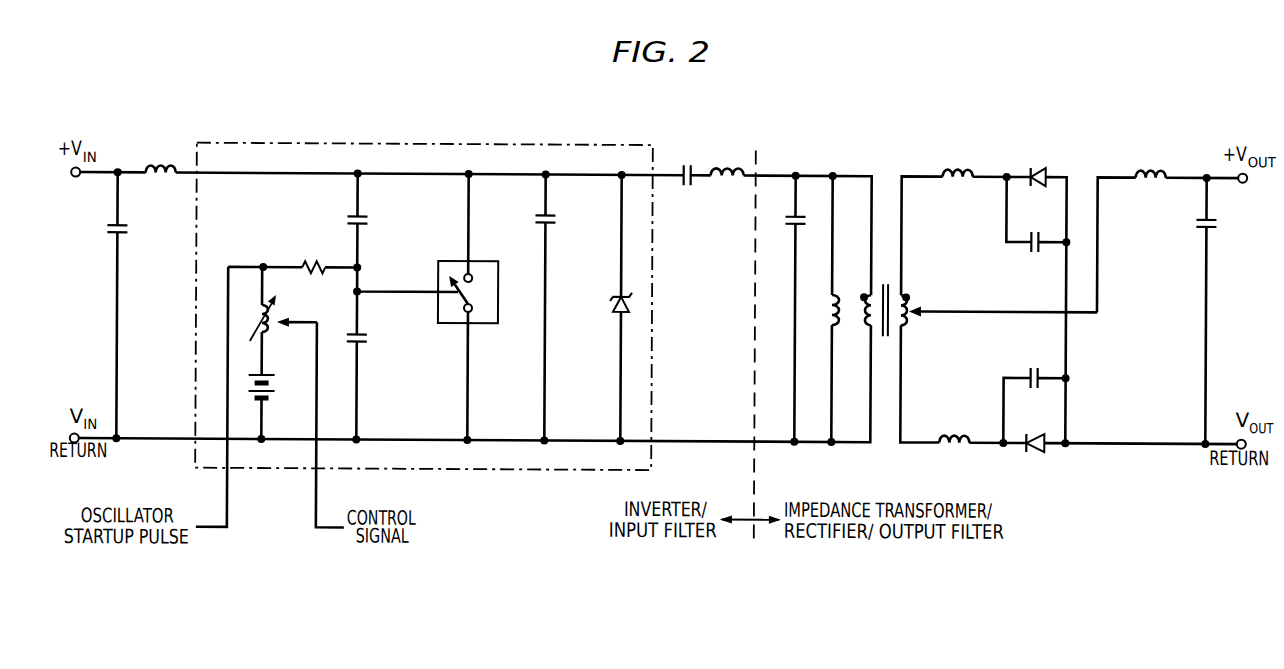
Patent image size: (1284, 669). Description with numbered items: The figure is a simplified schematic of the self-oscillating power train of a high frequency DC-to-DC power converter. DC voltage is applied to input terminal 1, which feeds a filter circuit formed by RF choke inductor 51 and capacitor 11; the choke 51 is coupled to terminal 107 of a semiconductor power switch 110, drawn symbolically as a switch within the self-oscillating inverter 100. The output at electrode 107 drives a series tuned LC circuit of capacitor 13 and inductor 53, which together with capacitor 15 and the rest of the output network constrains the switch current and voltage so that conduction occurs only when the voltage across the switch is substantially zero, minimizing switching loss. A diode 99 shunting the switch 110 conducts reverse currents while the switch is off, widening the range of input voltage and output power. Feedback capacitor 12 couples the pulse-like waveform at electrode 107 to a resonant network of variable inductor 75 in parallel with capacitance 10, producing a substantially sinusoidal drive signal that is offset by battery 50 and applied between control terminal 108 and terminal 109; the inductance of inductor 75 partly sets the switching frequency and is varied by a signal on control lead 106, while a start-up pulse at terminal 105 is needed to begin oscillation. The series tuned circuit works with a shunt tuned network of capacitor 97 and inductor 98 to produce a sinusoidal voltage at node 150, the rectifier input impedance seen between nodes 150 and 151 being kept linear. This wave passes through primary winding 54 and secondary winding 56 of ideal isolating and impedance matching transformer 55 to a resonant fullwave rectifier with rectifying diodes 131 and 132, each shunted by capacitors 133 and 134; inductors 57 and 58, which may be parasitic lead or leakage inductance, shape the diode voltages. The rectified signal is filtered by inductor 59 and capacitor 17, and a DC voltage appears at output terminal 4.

The input terminal 1 is at (101, 179).
The output terminal 4 is at (1240, 180).
The capacitance 10 is at (366, 365).
The capacitor 11 is at (124, 305).
The feedback capacitor 12 is at (367, 220).
The capacitor 13 is at (686, 162).
The capacitor 15 is at (555, 307).
The capacitor 17 is at (1195, 311).
The battery 50 is at (272, 407).
The RF choke inductor 51 is at (161, 156).
The inductor 53 is at (727, 158).
The primary winding 54 is at (871, 297).
The transformer 55 is at (901, 163).
The secondary winding 56 is at (909, 316).
The inductor 57 is at (958, 160).
The inductor 58 is at (954, 425).
The inductor 59 is at (1151, 160).
The variable inductor 75 is at (256, 321).
The capacitor 97 is at (804, 309).
The inductor 98 is at (819, 309).
The diode 99 is at (610, 308).
The inverter 100 is at (235, 145).
The terminal 105 is at (231, 516).
The control lead 106 is at (313, 497).
The terminal 107 is at (470, 221).
The control terminal 108 is at (413, 294).
The terminal 109 is at (470, 369).
The semiconductor power switch 110 is at (499, 305).
The rectifying diode 131 is at (1040, 163).
The rectifying diode 132 is at (1034, 431).
The capacitor 133 is at (1036, 214).
The capacitor 134 is at (1034, 391).
The node 150 is at (794, 160).
The node 151 is at (793, 453).